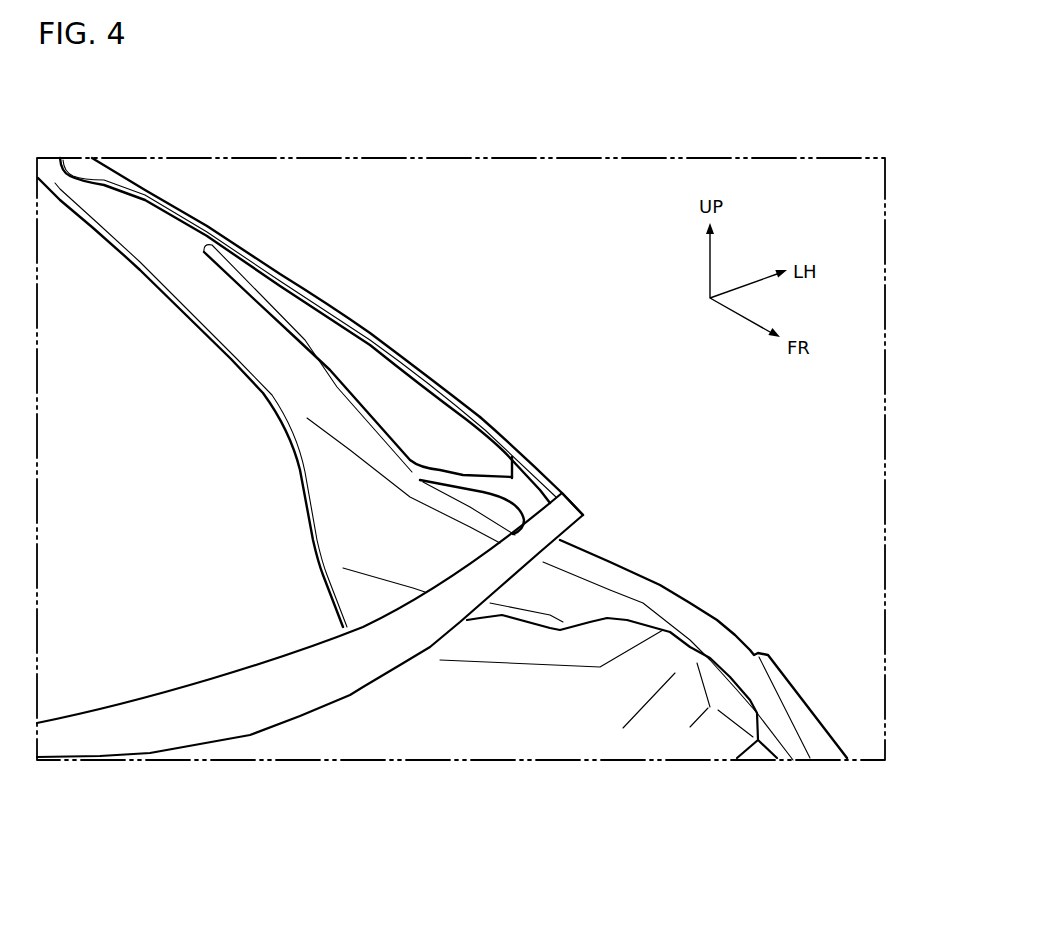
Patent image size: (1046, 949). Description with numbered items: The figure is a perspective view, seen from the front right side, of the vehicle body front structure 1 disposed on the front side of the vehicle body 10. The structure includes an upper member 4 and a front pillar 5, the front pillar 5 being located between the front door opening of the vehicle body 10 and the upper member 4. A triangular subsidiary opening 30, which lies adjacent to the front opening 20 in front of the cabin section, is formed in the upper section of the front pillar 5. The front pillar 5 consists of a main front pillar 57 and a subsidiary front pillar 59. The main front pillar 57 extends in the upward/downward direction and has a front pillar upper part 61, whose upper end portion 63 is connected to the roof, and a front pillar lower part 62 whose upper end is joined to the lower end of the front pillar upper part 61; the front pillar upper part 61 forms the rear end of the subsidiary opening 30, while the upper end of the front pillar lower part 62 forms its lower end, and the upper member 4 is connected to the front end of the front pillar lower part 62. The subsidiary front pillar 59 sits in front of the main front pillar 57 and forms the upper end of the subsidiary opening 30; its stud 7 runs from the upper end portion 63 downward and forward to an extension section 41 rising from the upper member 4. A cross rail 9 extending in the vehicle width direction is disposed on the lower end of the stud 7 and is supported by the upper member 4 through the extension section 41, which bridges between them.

The vehicle body front structure 1 is at (326, 305).
The upper member 4 is at (664, 589).
The front pillar 5 is at (407, 341).
The stud 7 is at (447, 390).
The cross rail 9 is at (237, 703).
The vehicle body 10 is at (639, 126).
The front opening 20 is at (223, 672).
The subsidiary opening 30 is at (322, 380).
The extension section 41 is at (520, 482).
The main front pillar 57 is at (184, 368).
The subsidiary front pillar 59 is at (503, 409).
The front pillar upper part 61 is at (168, 262).
The front pillar lower part 62 is at (350, 533).
The upper end portion 63 is at (98, 175).